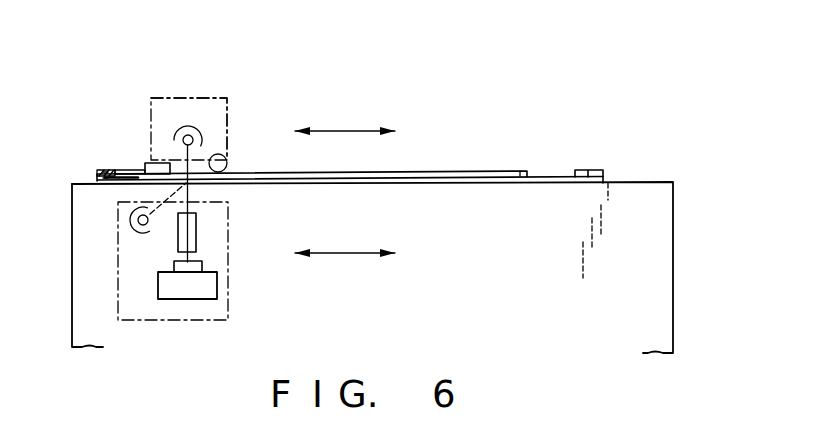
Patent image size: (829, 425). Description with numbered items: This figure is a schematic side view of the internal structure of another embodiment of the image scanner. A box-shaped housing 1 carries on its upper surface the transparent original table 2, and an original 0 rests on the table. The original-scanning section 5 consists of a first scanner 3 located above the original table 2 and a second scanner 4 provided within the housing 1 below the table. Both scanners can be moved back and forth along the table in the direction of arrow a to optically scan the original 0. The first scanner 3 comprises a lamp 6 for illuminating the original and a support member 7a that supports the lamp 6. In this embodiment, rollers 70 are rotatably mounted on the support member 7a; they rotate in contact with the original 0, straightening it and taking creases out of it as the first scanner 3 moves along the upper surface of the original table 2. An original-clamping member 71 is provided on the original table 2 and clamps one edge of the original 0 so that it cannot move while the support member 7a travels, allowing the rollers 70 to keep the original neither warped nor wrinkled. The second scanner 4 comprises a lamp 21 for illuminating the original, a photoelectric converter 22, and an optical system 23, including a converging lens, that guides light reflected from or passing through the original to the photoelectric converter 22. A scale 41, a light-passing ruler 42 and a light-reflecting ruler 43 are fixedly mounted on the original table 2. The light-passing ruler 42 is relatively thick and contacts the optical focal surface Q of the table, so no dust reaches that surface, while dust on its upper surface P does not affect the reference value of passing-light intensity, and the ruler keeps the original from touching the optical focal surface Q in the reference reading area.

The housing 1 is at (673, 240).
The original table 2 is at (464, 183).
The first scanner 3 is at (192, 88).
The second scanner 4 is at (172, 321).
The original-scanning section 5 is at (72, 267).
The lamp 6 is at (197, 133).
The support member 7a is at (222, 116).
The lamp 21 is at (136, 232).
The photoelectric converter 22 is at (203, 268).
The optical system 23 is at (197, 236).
The scale 41 is at (123, 169).
The light-passing ruler 42 is at (97, 171).
The light-reflecting ruler 43 is at (133, 179).
The rollers 70 is at (228, 163).
The original-clamping member 71 is at (147, 164).
The upper surface of light-passing ruler P is at (103, 172).
The optical focal surface Q is at (103, 178).
The original 0 is at (523, 183).
The direction of arrow a is at (345, 182).